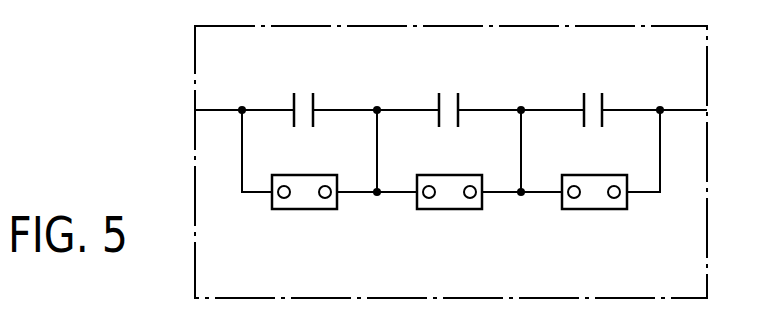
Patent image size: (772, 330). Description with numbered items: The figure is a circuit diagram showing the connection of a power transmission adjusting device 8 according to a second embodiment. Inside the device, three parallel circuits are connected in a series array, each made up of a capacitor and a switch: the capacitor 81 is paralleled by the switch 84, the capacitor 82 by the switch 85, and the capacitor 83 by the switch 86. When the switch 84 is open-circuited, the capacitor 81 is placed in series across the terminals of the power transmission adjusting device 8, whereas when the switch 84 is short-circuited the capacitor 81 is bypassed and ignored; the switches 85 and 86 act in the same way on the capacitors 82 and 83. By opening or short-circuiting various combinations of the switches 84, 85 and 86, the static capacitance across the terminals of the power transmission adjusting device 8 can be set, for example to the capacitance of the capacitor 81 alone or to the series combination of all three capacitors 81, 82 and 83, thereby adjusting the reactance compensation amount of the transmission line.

The power transmission adjusting device 8 is at (708, 70).
The capacitor 81 is at (302, 92).
The capacitor 82 is at (448, 92).
The capacitor 83 is at (592, 92).
The switch 84 is at (304, 210).
The switch 85 is at (450, 210).
The switch 86 is at (593, 210).